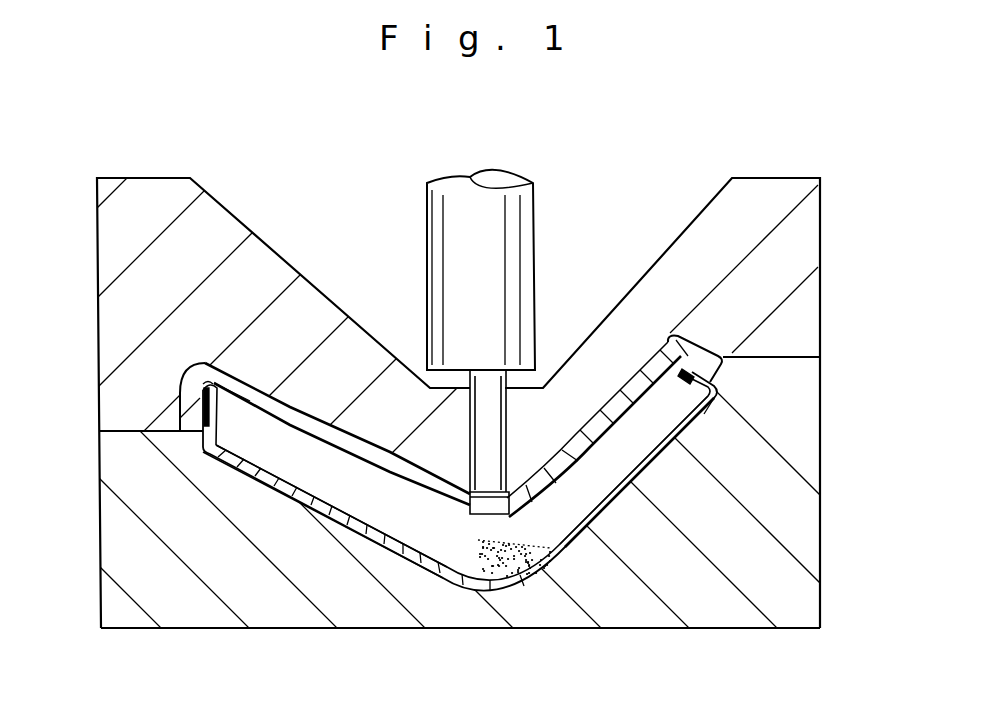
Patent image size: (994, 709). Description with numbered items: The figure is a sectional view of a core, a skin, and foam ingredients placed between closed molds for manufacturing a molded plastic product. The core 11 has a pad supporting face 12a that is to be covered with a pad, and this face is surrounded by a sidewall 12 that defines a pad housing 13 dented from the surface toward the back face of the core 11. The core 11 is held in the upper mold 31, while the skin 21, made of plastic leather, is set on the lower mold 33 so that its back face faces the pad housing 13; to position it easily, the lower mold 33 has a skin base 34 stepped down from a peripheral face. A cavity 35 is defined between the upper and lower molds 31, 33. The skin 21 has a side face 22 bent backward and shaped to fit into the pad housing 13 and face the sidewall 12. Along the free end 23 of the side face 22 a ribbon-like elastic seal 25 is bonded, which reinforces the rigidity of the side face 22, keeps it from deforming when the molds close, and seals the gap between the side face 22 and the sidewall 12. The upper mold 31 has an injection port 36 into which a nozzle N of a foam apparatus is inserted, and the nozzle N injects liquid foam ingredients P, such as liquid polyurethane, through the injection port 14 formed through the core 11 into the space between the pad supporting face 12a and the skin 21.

The core 11 is at (633, 372).
The sidewall 12 is at (176, 401).
The pad supporting face 12a is at (273, 412).
The pad housing 13 is at (366, 378).
The injection port 14 is at (471, 507).
The skin 21 is at (623, 507).
The side face 22 is at (255, 398).
The free end 23 is at (212, 392).
The elastic seal 25 is at (195, 363).
The upper mold 31 is at (793, 226).
The lower mold 33 is at (797, 558).
The skin base 34 is at (303, 503).
The cavity 35 is at (675, 440).
The injection port 36 is at (470, 446).
The nozzle N is at (557, 393).
The foam ingredients P is at (532, 541).